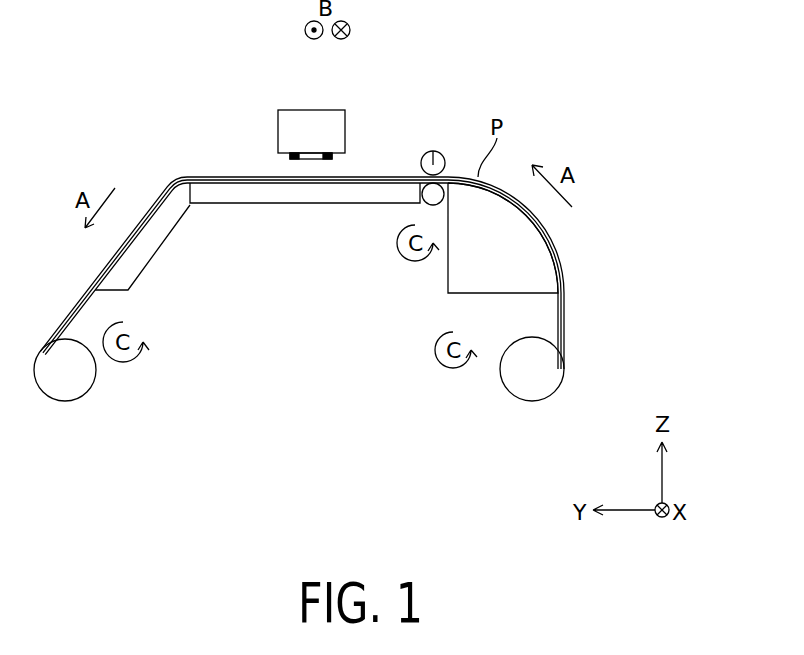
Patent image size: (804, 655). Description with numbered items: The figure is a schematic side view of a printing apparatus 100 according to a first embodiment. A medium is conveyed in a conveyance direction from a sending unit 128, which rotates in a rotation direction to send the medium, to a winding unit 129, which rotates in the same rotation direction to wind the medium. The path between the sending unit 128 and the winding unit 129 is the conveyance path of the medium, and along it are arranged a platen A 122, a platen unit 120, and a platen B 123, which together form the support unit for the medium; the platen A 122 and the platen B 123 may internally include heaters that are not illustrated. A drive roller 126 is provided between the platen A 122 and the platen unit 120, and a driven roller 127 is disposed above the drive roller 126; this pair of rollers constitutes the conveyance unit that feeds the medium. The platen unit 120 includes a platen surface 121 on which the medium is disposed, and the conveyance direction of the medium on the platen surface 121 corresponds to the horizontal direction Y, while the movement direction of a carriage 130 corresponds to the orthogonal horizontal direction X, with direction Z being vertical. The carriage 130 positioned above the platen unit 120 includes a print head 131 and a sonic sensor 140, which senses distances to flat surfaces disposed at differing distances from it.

The printing apparatus 100 is at (548, 82).
The platen unit 120 is at (232, 196).
The platen surface 121 is at (213, 178).
The platen A 122 is at (460, 266).
The platen B 123 is at (143, 247).
The drive roller 126 is at (426, 196).
The driven roller 127 is at (433, 151).
The sending unit 128 is at (517, 377).
The winding unit 129 is at (87, 373).
The carriage 130 is at (288, 118).
The print head 131 is at (322, 160).
The sonic sensor 140 is at (298, 100).